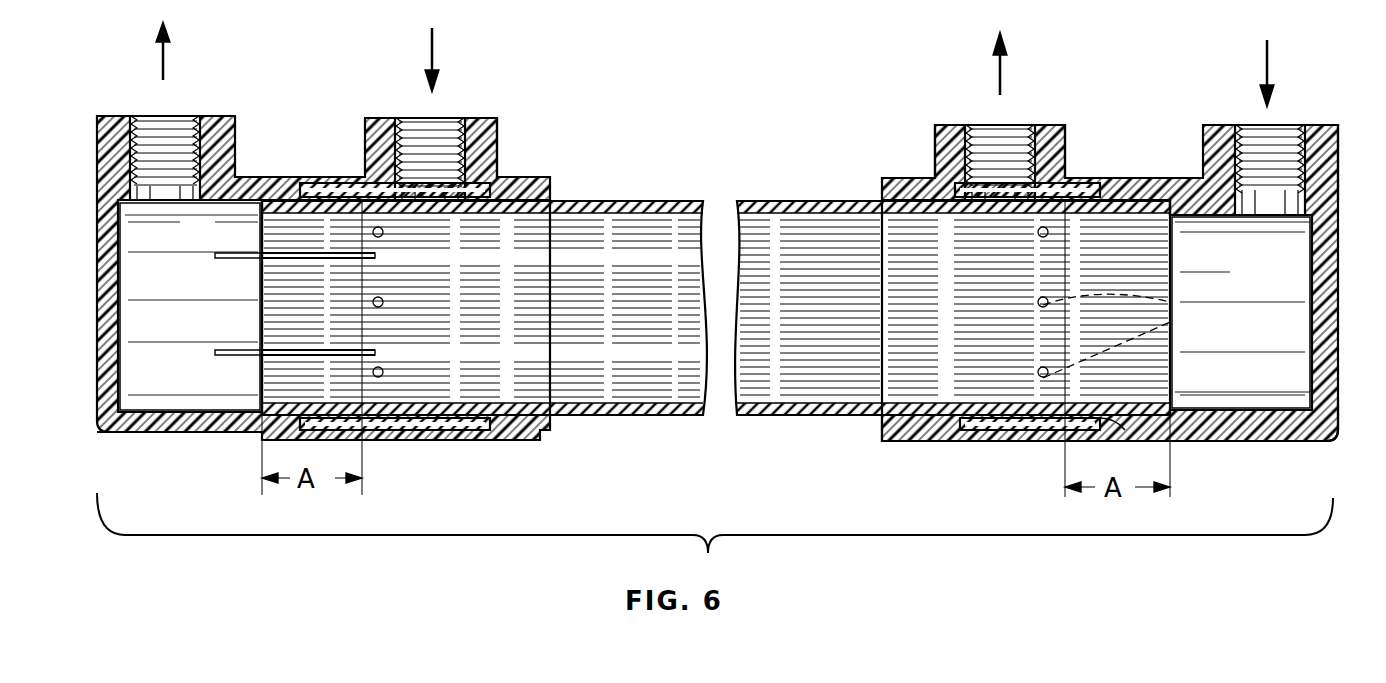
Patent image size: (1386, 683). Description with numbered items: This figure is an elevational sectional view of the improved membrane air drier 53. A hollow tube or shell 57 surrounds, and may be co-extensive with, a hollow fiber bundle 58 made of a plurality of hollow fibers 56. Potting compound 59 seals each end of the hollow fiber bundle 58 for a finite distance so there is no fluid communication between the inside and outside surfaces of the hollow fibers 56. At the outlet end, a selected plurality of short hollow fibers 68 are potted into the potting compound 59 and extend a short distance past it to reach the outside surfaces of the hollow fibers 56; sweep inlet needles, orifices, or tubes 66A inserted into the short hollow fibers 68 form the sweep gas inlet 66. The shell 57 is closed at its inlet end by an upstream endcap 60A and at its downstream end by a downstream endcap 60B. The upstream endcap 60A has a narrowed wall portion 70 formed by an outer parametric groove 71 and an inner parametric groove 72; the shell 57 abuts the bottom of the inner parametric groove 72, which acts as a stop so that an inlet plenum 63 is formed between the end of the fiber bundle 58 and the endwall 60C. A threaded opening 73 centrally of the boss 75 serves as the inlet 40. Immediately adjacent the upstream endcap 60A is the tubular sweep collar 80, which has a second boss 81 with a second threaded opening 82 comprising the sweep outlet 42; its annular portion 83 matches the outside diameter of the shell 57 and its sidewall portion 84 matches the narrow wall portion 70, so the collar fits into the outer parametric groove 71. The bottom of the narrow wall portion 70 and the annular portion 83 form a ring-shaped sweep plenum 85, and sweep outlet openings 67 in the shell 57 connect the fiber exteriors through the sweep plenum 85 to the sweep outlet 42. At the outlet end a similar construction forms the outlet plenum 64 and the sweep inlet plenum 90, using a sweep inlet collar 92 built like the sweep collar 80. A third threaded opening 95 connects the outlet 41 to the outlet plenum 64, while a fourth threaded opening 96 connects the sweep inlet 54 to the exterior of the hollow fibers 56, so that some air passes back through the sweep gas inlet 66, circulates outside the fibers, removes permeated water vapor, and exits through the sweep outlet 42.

The membrane air drier 53 is at (740, 100).
The hollow fiber bundle 58 is at (645, 350).
The hollow tube or shell 57 is at (778, 200).
The upstream endcap 60A is at (1330, 325).
The downstream endcap 60B is at (132, 405).
The endwall 60C is at (1318, 400).
The outlet 41 is at (185, 116).
The third threaded opening 95 is at (143, 116).
The sweep inlet 54 is at (447, 118).
The fourth threaded opening 96 is at (408, 118).
The sweep inlet plenum 90 is at (488, 172).
The sweep inlet collar 92 is at (322, 170).
The short hollow fibers 68 is at (287, 190).
The sweep gas inlet 66 is at (190, 306).
The sweep inlet needles, orifices, or tubes 66A is at (225, 260).
The potting compound 59 is at (255, 214).
The hollow fibers 56 is at (262, 338).
The outlet plenum 64 is at (185, 428).
The sweep outlet 42 is at (1018, 125).
The second threaded opening 82 is at (980, 125).
The second boss 81 is at (950, 178).
The sweep plenum 85 is at (1088, 185).
The sweep collar 80 is at (1125, 172).
The inner parametric groove 72 is at (1150, 200).
The inlet 40 is at (1277, 125).
The threaded opening 73 is at (1245, 125).
The boss 75 is at (1328, 125).
The inlet plenum 63 is at (1241, 312).
The sweep outlet openings 67 is at (1172, 318).
The narrowed wall portion 70 is at (1070, 428).
The outer parametric groove 71 is at (1140, 445).
The annular portion 83 is at (890, 440).
The sidewall portion 84 is at (975, 440).